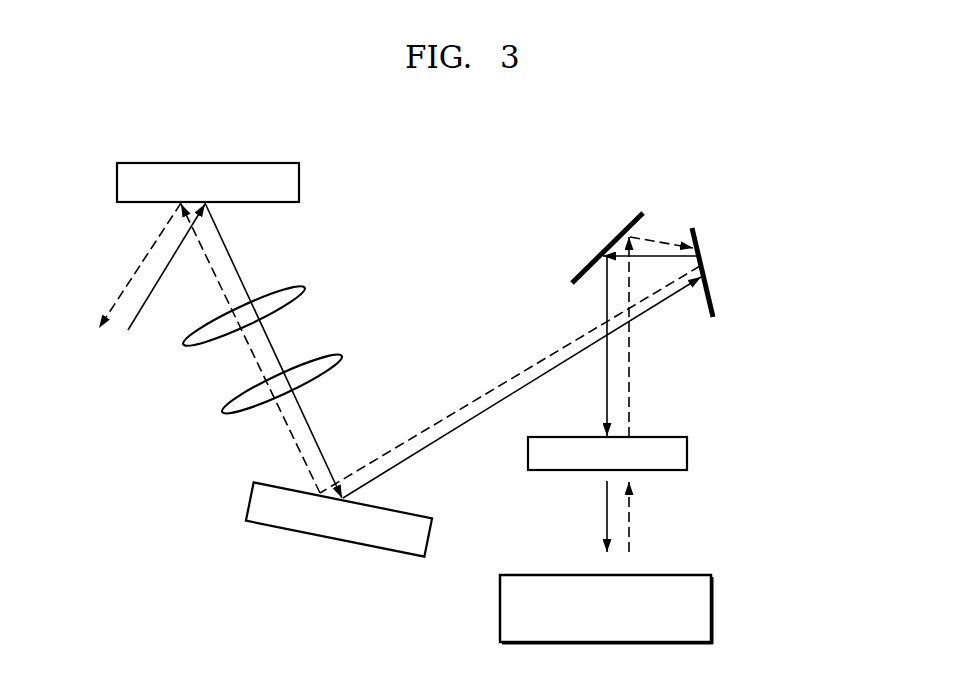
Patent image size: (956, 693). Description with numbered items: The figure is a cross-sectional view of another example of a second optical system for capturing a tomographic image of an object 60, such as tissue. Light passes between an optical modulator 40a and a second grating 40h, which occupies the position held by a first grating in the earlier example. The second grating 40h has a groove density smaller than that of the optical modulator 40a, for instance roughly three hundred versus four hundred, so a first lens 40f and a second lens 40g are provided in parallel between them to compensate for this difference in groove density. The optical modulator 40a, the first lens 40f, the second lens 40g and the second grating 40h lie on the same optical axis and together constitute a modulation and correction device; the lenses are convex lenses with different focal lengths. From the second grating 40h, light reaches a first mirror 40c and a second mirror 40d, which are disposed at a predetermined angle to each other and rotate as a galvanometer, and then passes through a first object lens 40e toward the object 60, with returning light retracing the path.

The optical modulator 40a is at (163, 172).
The first lens 40f is at (293, 298).
The second lens 40g is at (335, 370).
The second grating 40h is at (310, 525).
The second mirror 40d is at (592, 262).
The first mirror 40c is at (714, 300).
The first object lens 40e is at (688, 453).
The object 60 is at (712, 603).